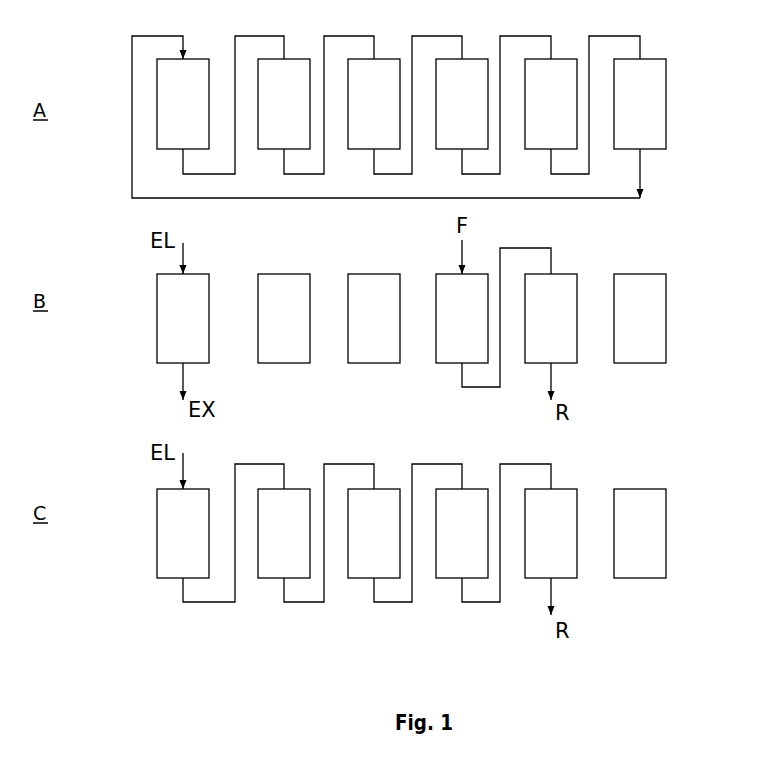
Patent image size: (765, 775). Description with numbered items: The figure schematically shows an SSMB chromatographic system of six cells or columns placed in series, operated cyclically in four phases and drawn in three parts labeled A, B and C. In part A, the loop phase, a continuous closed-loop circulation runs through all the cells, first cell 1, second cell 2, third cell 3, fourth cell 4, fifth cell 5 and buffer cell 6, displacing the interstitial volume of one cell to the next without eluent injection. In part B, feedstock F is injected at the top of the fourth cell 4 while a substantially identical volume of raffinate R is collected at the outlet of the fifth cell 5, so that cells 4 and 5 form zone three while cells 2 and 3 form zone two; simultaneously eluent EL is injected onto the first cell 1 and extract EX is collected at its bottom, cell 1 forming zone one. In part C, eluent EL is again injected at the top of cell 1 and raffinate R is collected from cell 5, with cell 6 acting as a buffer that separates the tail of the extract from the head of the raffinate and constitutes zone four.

The first cell 1 is at (183, 318).
The second cell 2 is at (284, 318).
The third cell 3 is at (374, 318).
The fourth cell 4 is at (462, 318).
The fifth cell 5 is at (551, 318).
The buffer cell 6 is at (640, 318).